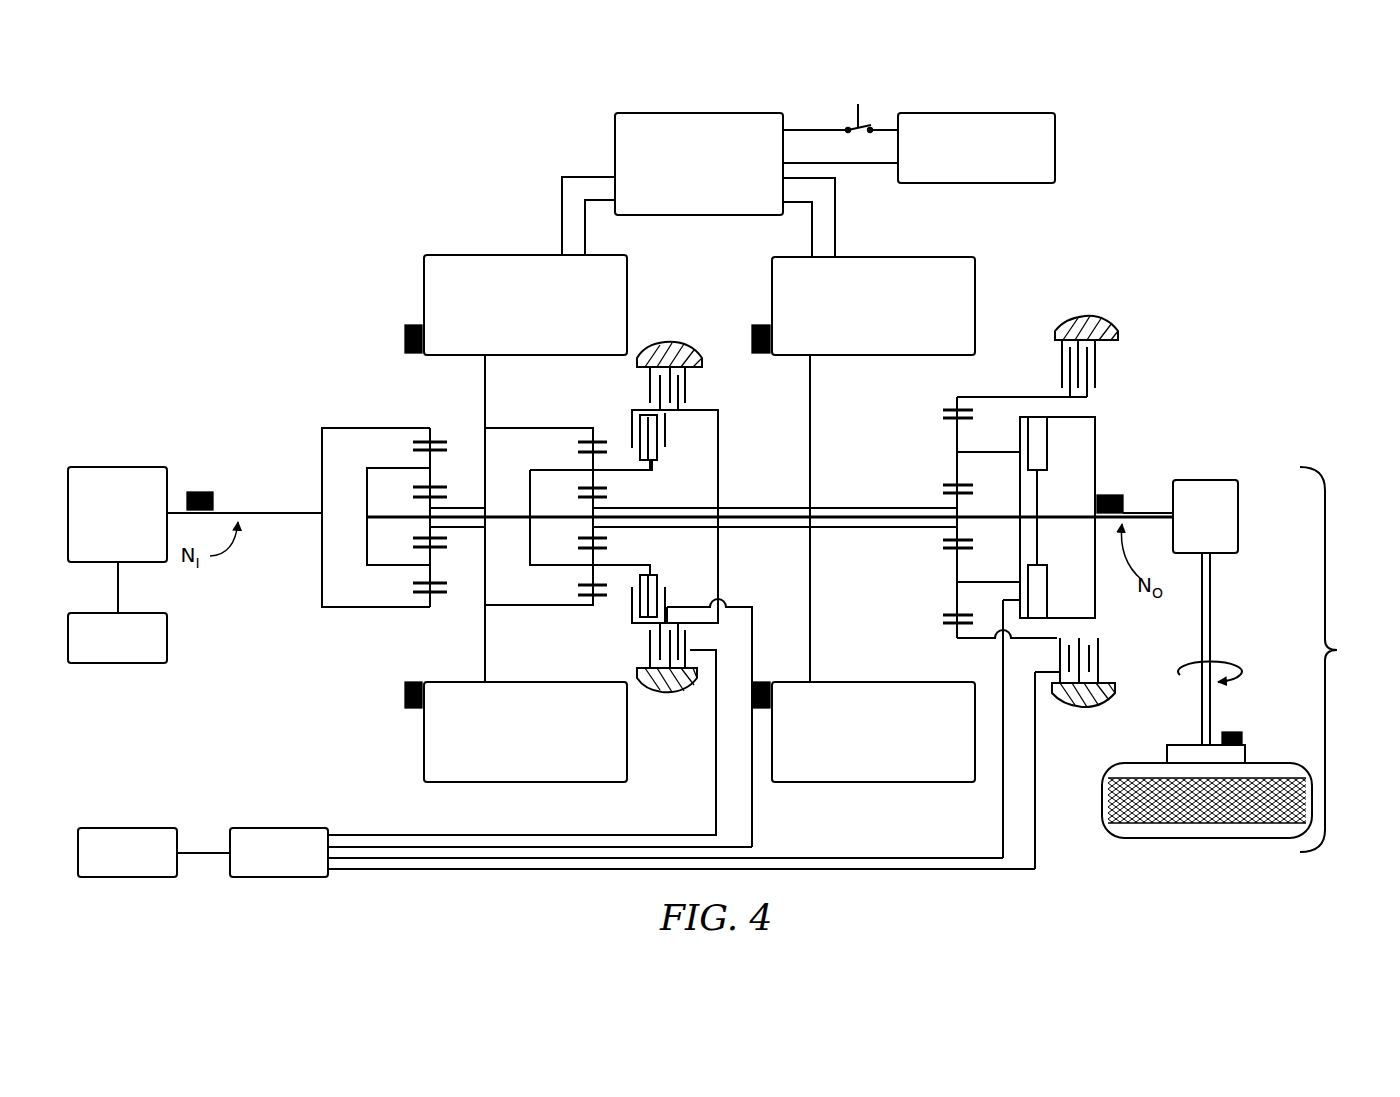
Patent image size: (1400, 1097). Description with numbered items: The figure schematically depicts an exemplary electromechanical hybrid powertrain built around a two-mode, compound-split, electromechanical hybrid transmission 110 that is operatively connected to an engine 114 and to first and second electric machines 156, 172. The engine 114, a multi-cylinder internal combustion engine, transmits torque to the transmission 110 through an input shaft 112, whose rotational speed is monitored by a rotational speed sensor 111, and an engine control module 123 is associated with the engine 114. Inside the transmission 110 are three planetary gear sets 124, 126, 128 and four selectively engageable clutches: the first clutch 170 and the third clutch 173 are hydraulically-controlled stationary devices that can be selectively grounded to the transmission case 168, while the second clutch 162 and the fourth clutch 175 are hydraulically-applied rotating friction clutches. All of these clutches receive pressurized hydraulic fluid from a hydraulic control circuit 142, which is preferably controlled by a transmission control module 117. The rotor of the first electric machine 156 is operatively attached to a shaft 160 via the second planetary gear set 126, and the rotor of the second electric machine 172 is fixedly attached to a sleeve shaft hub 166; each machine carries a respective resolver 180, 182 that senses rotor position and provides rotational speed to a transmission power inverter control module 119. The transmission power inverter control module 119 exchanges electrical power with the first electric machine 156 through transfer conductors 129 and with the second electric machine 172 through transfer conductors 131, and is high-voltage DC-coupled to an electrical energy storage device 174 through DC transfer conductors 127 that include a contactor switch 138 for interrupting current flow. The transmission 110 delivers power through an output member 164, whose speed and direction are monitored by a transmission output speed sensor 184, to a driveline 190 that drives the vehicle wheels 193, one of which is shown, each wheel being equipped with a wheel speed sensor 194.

The electromechanical hybrid transmission 110 is at (380, 214).
The rotational speed sensor 111 is at (200, 492).
The input shaft 112 is at (280, 512).
The engine 114 is at (118, 467).
The transmission control module 117 is at (120, 828).
The transmission power inverter control module 119 is at (615, 128).
The engine control module 123 is at (165, 655).
The first planetary gear set 124 is at (419, 418).
The second planetary gear set 126 is at (587, 418).
The DC transfer conductors 127 is at (800, 128).
The third planetary gear set 128 is at (946, 396).
The transfer conductors 129 is at (562, 210).
The transfer conductors 131 is at (837, 210).
The contactor switch 138 is at (859, 108).
The hydraulic control circuit 142 is at (250, 828).
The first electric machine 156 is at (424, 290).
The shaft 160 is at (1010, 516).
The clutch C2 162 is at (1058, 454).
The output member 164 is at (1145, 512).
The sleeve shaft hub 166 is at (855, 508).
The transmission case 168 is at (668, 345).
The clutch C1 170 is at (1058, 356).
The second electric machine 172 is at (975, 272).
The clutch C3 173 is at (690, 388).
The electrical energy storage device 174 is at (1057, 135).
The clutch C4 175 is at (672, 442).
The resolver 180 is at (405, 338).
The resolver 182 is at (758, 325).
The transmission output speed sensor 184 is at (1112, 495).
The driveline 190 is at (1340, 650).
The vehicle wheel 193 is at (1167, 760).
The wheel speed sensor 194 is at (1240, 732).